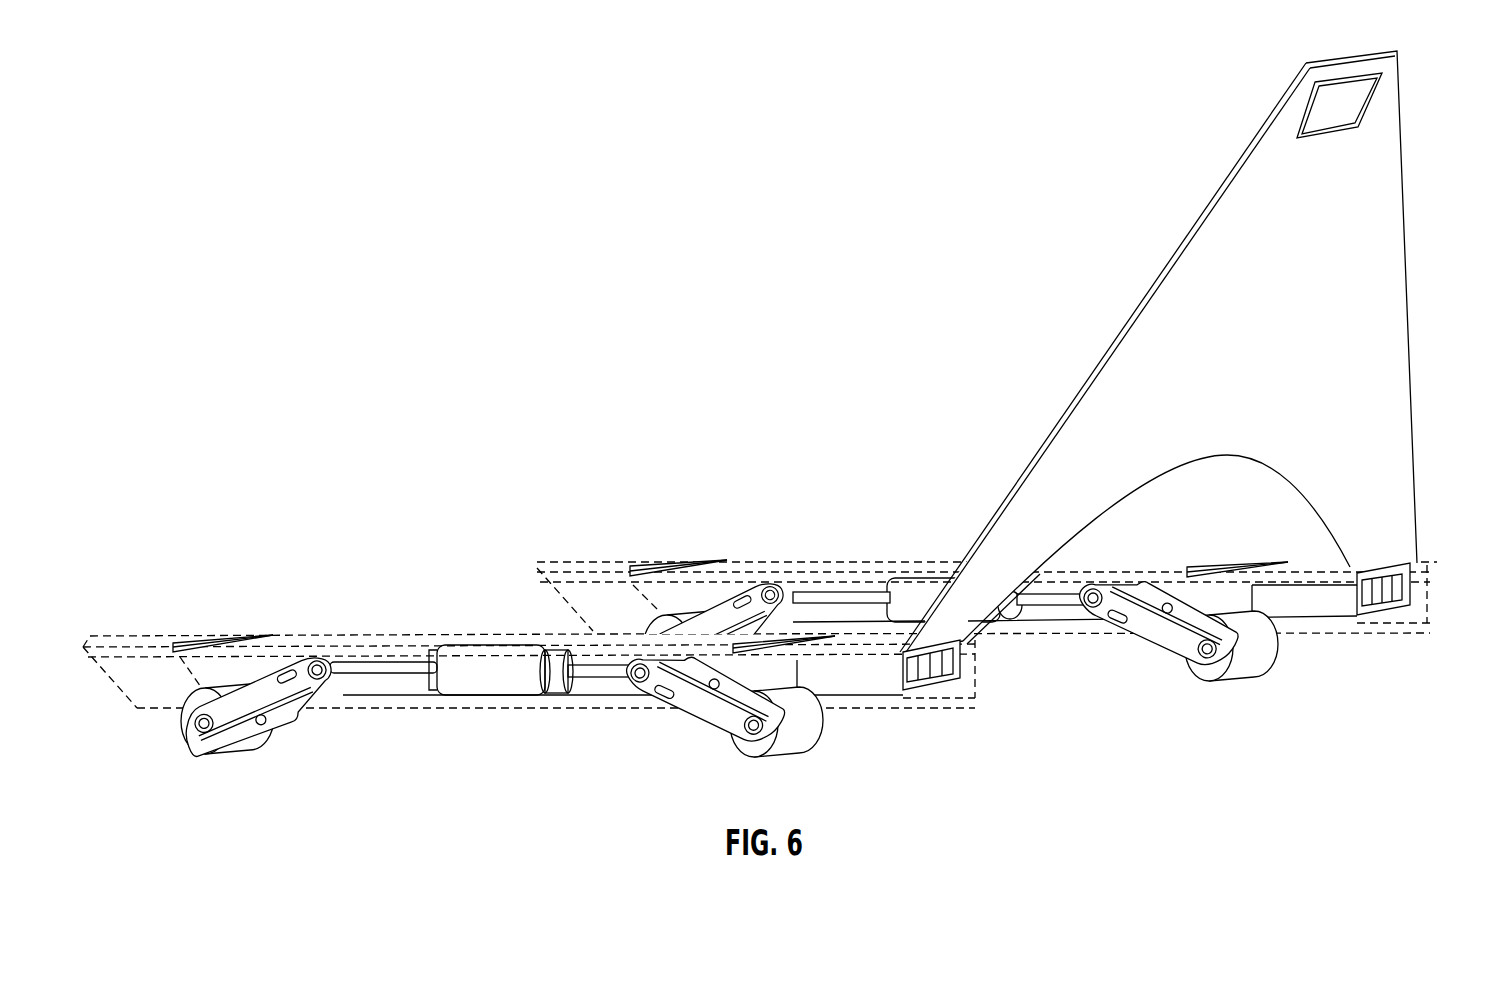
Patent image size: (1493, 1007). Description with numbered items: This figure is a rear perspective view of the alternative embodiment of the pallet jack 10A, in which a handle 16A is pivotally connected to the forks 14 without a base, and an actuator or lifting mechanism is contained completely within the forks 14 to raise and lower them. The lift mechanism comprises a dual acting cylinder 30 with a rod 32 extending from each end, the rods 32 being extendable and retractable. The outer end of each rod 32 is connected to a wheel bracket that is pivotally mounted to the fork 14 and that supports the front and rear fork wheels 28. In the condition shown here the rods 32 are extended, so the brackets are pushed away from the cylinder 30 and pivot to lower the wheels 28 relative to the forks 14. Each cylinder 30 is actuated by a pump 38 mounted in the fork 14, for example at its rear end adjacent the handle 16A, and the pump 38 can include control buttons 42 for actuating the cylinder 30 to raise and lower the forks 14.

The pallet jack 10A is at (820, 300).
The handle 16A is at (1133, 356).
The forks 14 is at (185, 642).
The fork wheels 28 is at (203, 738).
The dual acting cylinder 30 is at (487, 687).
The rod 32 is at (400, 667).
The pump 38 is at (1303, 595).
The control buttons 42 is at (1380, 607).